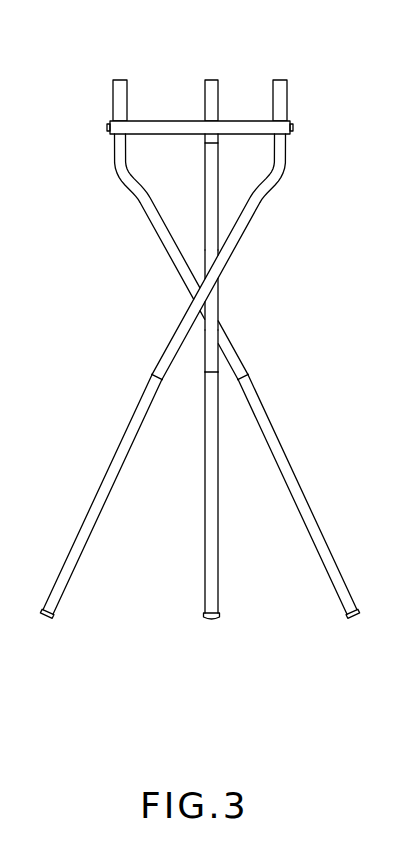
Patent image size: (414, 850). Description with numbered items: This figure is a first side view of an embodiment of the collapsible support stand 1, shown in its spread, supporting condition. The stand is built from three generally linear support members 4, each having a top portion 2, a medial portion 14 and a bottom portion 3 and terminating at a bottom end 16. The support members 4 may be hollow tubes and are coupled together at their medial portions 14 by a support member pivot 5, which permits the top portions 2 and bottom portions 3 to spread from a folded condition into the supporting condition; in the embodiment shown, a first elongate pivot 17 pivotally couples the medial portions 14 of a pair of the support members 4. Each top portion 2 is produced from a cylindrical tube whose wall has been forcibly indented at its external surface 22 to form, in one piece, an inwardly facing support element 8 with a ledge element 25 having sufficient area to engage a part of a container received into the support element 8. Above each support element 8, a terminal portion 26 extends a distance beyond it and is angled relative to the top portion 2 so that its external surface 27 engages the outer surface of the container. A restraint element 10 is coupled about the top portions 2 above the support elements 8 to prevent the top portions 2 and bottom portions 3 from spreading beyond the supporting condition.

The collapsible support stand 1 is at (206, 343).
The top portions 2 is at (207, 261).
The external surface 22 is at (207, 261).
The bottom portions 3 is at (203, 493).
The support members 4 is at (112, 503).
The support member pivot 5 is at (241, 289).
The support elements 8 is at (112, 172).
The restraint element 10 is at (170, 126).
The medial portions 14 is at (165, 355).
The bottom ends 16 is at (50, 617).
The first elongate pivot 17 is at (229, 307).
The ledge element 25 is at (210, 158).
The terminal portions 26 is at (191, 71).
The external surface 27 is at (191, 71).